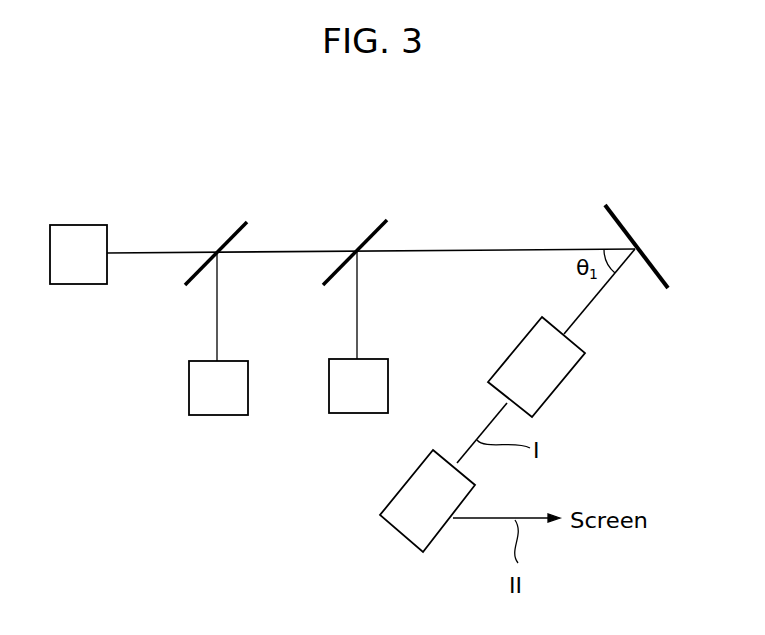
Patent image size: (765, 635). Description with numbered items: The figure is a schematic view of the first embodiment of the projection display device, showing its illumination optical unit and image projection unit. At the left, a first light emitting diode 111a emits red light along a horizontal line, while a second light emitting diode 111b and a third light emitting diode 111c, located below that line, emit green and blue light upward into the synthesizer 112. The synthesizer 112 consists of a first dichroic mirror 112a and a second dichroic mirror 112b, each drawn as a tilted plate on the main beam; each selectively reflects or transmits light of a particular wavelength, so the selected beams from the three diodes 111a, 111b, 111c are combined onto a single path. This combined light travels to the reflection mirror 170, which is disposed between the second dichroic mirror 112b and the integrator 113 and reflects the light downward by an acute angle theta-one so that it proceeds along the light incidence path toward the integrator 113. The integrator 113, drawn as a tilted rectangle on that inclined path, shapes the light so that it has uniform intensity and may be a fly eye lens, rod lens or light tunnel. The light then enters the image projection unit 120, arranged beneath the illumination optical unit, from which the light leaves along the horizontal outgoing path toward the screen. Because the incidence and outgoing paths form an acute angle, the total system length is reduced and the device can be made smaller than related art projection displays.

The first light emitting diode 111a is at (72, 226).
The second light emitting diode 111b is at (190, 388).
The third light emitting diode 111c is at (383, 387).
The synthesizer 112 is at (286, 232).
The first dichroic mirror 112a is at (226, 233).
The second dichroic mirror 112b is at (355, 261).
The integrator 113 is at (560, 375).
The image projection unit 120 is at (395, 495).
The reflection mirror 170 is at (620, 218).